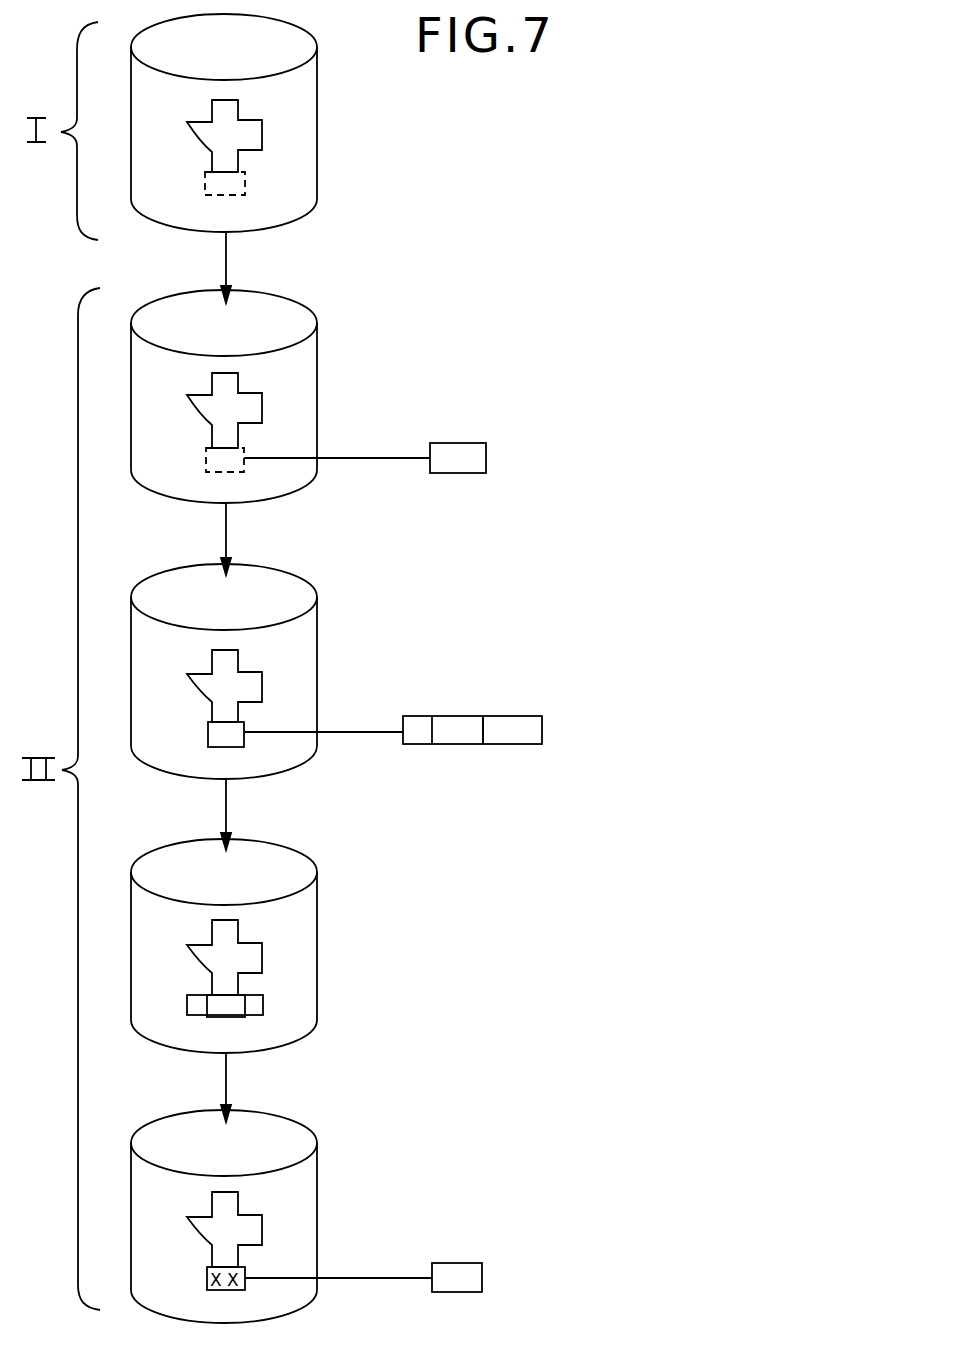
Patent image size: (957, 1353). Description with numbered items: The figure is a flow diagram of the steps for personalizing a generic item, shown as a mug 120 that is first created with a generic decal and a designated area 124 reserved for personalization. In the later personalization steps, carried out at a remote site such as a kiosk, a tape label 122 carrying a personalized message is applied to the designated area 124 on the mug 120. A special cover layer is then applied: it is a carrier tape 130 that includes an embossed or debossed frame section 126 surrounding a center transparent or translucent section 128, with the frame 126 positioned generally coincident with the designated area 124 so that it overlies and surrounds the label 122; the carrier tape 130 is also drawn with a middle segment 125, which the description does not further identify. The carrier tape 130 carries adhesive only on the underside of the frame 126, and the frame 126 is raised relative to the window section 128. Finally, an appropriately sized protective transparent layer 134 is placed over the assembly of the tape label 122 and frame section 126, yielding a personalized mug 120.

The mug 120 is at (304, 178).
The tape label 122 is at (478, 443).
The designated area 124 is at (246, 452).
The middle segment of compressed block 125 is at (472, 716).
The frame section 126 is at (465, 746).
The center transparent or translucent section 128 is at (440, 746).
The carrier tape 130 is at (530, 712).
The protective transparent layer 134 is at (452, 1262).